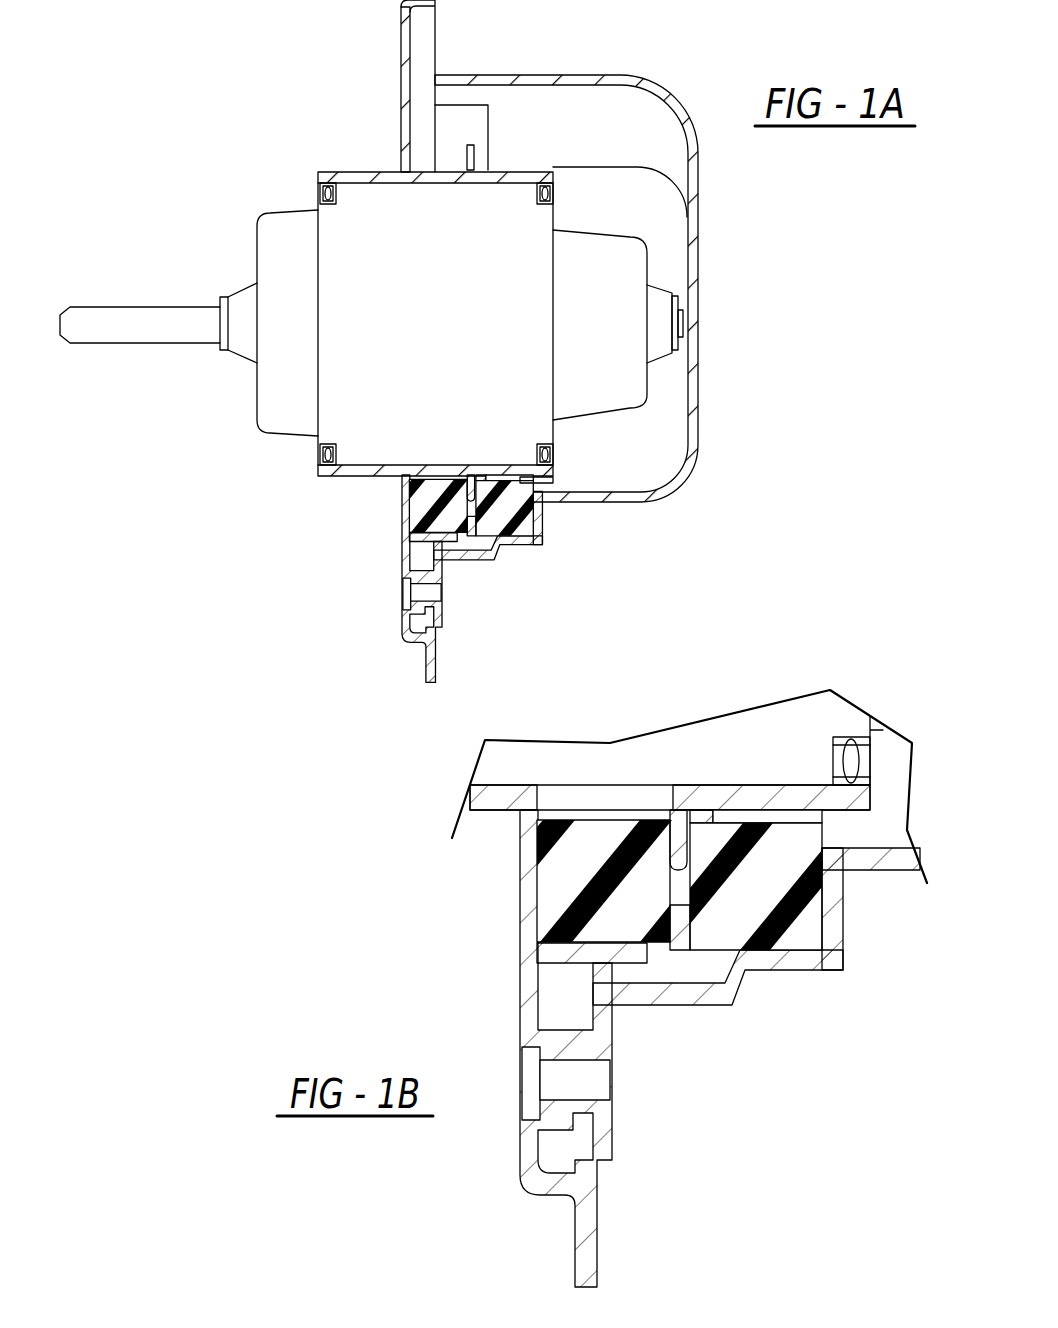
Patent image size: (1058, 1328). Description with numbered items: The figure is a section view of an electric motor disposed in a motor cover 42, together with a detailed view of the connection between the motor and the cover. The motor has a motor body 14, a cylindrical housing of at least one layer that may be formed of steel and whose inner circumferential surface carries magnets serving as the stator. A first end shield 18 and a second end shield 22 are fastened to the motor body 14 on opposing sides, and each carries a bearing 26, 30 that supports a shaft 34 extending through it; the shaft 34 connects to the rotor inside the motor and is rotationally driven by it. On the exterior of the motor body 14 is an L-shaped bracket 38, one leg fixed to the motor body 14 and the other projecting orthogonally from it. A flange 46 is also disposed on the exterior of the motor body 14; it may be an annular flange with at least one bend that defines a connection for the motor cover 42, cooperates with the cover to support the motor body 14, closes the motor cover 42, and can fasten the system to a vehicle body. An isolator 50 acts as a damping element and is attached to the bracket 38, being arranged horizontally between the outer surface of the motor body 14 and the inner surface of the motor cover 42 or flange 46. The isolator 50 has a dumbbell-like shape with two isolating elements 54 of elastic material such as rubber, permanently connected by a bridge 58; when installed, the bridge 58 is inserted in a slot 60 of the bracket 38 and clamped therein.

In FIG. 1A, the motor body 14 is at (455, 324).
In FIG. 1B, the motor body 14 is at (750, 758).
In FIG. 1A, the first end shield 18 is at (620, 387).
In FIG. 1A, the second end shield 22 is at (293, 407).
In FIG. 1A, the bearing 26 is at (660, 325).
In FIG. 1A, the bearing 30 is at (240, 345).
In FIG. 1A, the shaft 34 is at (127, 322).
In FIG. 1A, the bracket 38 is at (553, 470).
In FIG. 1B, the bracket 38 is at (858, 800).
In FIG. 1A, the motor cover 42 is at (694, 444).
In FIG. 1B, the motor cover 42 is at (833, 928).
In FIG. 1A, the flange 46 is at (405, 30).
In FIG. 1B, the flange 46 is at (527, 957).
In FIG. 1A, the isolator 50 is at (420, 500).
In FIG. 1B, the isolator 50 is at (557, 900).
In FIG. 1A, the isolating element 54 is at (440, 520).
In FIG. 1B, the isolating element 54 is at (573, 866).
In FIG. 1B, the bridge 58 is at (677, 883).
In FIG. 1A, the slot 60 is at (492, 508).
In FIG. 1B, the slot 60 is at (680, 868).